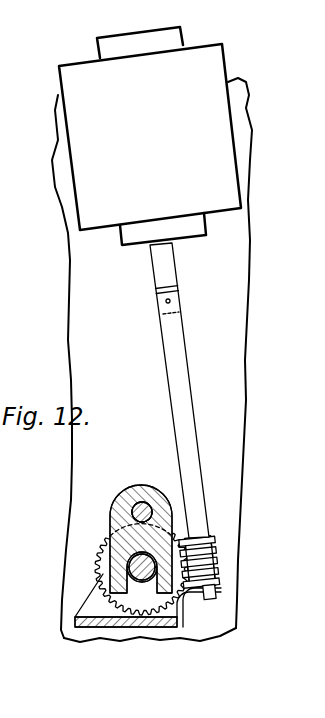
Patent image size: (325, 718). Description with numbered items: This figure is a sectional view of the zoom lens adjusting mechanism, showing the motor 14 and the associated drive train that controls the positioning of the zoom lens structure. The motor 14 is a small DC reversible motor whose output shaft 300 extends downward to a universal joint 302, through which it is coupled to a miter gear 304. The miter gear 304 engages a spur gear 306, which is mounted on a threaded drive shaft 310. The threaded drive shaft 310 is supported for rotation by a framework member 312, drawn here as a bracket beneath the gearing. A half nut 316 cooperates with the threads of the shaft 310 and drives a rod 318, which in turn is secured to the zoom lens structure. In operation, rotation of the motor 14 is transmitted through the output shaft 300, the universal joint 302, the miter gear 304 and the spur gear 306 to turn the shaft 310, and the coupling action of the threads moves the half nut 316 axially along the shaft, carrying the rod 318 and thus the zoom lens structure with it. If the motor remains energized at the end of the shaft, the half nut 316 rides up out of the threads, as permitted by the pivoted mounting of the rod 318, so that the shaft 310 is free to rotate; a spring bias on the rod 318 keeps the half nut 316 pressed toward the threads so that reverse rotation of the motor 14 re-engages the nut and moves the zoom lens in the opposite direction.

The motor 14 is at (73, 68).
The output shaft 300 is at (163, 270).
The universal joint 302 is at (163, 308).
The miter gear 304 is at (217, 557).
The spur gear 306 is at (100, 547).
The threaded drive shaft 310 is at (143, 575).
The framework member 312 is at (82, 605).
The half nut 316 is at (155, 463).
The rod 318 is at (135, 513).